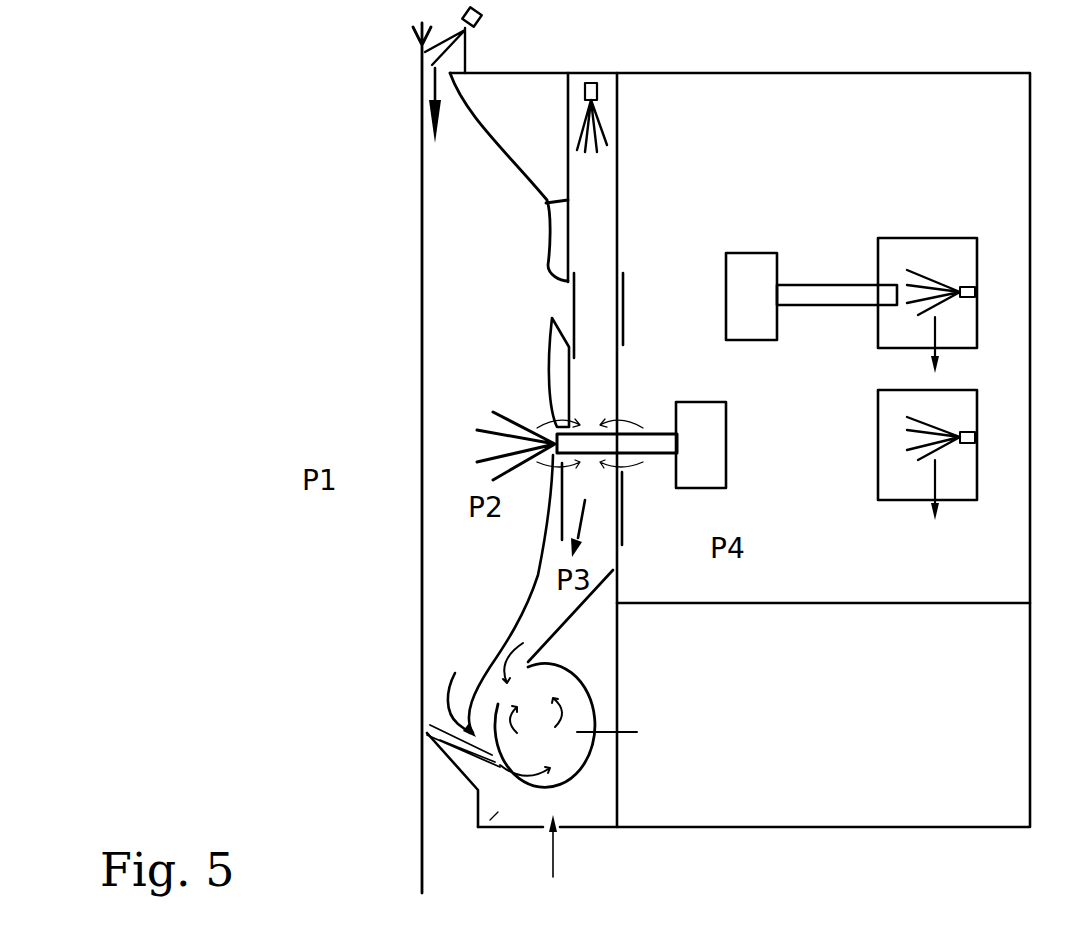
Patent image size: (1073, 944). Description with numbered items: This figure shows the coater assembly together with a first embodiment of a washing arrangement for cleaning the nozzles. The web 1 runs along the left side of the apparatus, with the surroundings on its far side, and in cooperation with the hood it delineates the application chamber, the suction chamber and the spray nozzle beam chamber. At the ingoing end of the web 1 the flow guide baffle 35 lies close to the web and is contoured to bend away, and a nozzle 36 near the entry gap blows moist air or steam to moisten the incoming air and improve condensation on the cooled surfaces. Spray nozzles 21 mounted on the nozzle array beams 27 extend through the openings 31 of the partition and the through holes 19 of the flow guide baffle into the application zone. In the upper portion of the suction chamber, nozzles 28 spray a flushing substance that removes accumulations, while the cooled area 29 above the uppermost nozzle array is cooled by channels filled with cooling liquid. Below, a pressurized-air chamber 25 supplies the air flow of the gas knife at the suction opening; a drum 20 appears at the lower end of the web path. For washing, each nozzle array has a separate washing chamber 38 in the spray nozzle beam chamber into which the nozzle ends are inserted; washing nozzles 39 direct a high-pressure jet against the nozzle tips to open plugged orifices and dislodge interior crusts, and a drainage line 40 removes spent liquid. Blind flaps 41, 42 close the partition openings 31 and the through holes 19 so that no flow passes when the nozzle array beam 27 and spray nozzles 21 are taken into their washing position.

The web 1 is at (420, 258).
The through holes 19 is at (549, 313).
The drum 20 is at (498, 765).
The spray nozzles 21 is at (810, 292).
The pressurized-air chamber 25 is at (480, 830).
The nozzle array beams 27 is at (748, 330).
The nozzles 28 is at (597, 73).
The cooled area 29 is at (568, 242).
The openings of partition 31 is at (622, 428).
The flow guide baffle 35 is at (502, 143).
The nozzle 36 is at (478, 27).
The washing chambers 38 is at (907, 238).
The washing nozzles 39 is at (977, 292).
The drainage line 40 is at (932, 357).
The blind flaps 41 is at (625, 298).
The blind flaps 42 is at (573, 298).